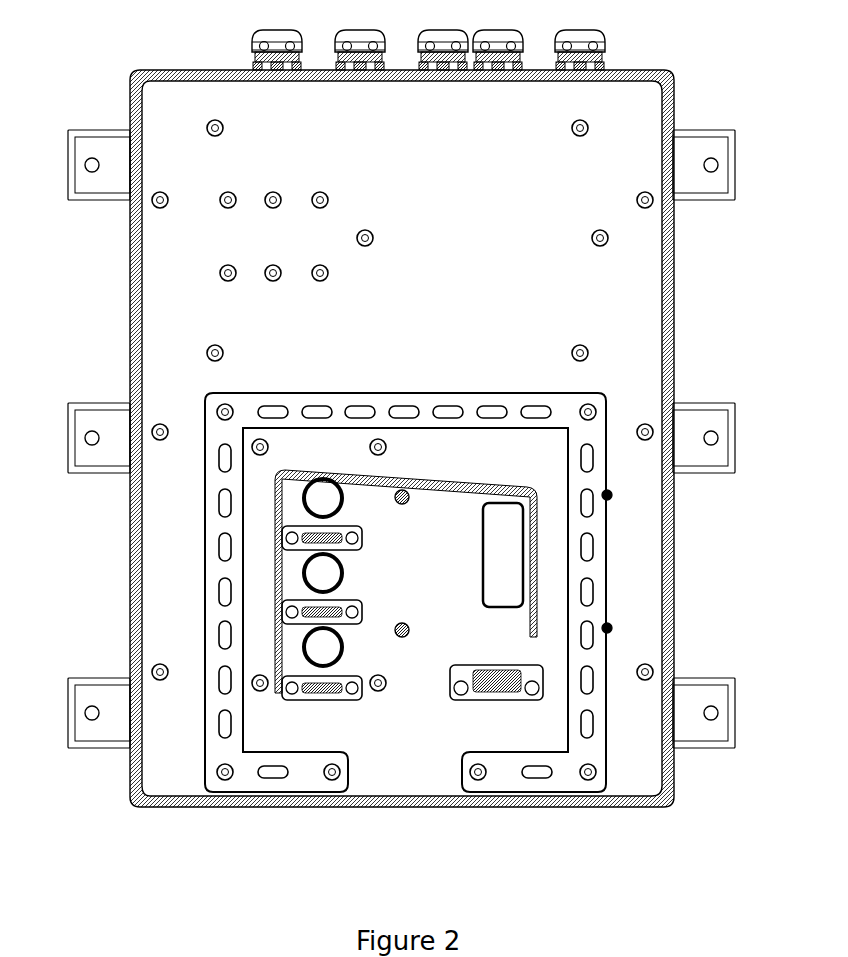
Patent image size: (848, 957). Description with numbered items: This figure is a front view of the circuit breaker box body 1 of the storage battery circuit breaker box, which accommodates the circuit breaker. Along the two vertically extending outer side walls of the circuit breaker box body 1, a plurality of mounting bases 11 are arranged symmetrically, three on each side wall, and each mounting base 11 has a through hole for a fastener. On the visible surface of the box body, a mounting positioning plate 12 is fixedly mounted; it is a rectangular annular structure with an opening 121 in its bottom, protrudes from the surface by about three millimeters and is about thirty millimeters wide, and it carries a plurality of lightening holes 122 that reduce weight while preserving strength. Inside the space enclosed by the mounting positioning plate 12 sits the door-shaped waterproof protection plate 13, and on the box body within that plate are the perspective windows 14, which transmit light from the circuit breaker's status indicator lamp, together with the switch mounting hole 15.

The circuit breaker box body 1 is at (190, 108).
The mounting base 11 is at (695, 420).
The mounting positioning plate 12 is at (388, 400).
The opening 121 is at (411, 779).
The lightening hole 122 is at (273, 773).
The waterproof protection plate 13 is at (437, 478).
The perspective window 14 is at (318, 573).
The switch mounting hole 15 is at (507, 573).